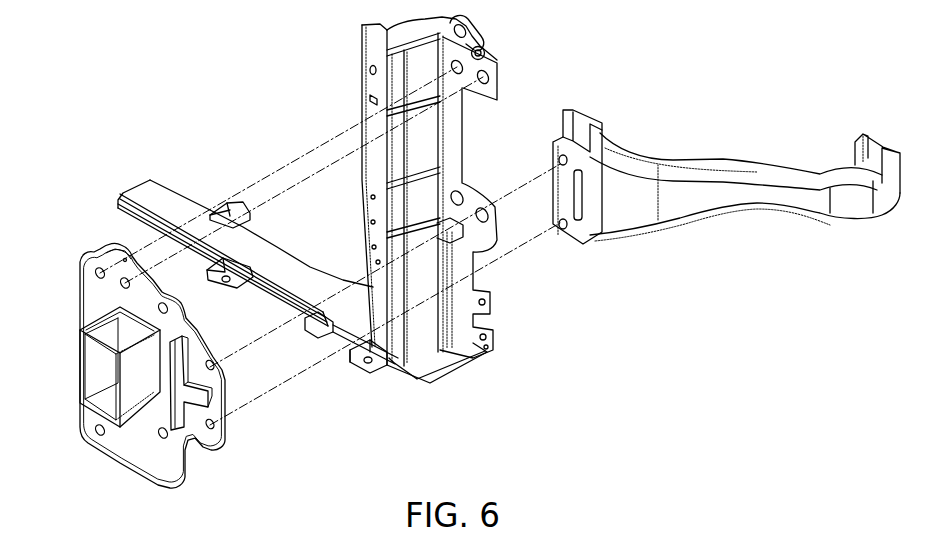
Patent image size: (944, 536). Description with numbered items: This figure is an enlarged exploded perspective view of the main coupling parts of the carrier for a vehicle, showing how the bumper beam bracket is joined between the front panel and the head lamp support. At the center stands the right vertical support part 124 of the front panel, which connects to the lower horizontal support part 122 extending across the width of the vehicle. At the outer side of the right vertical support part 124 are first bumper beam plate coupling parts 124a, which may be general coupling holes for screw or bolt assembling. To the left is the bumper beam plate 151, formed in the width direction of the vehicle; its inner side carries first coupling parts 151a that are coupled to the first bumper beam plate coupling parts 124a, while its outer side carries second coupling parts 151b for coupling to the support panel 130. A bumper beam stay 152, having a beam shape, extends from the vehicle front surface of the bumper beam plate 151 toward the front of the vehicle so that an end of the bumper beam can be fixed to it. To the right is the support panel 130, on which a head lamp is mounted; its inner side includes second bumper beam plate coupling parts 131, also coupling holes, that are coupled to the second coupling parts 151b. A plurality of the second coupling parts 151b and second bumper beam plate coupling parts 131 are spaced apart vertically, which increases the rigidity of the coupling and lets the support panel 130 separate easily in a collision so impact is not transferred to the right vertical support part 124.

The lower horizontal support part 122 is at (170, 203).
The right vertical support part 124 is at (363, 60).
The first bumper beam plate coupling part 124a is at (500, 72).
The support panel 130 is at (707, 212).
The second bumper beam plate coupling part 131 is at (564, 110).
The bumper beam plate 151 is at (153, 470).
The first coupling part 151a is at (108, 256).
The second coupling part 151b is at (222, 423).
The bumper beam stay 152 is at (80, 377).